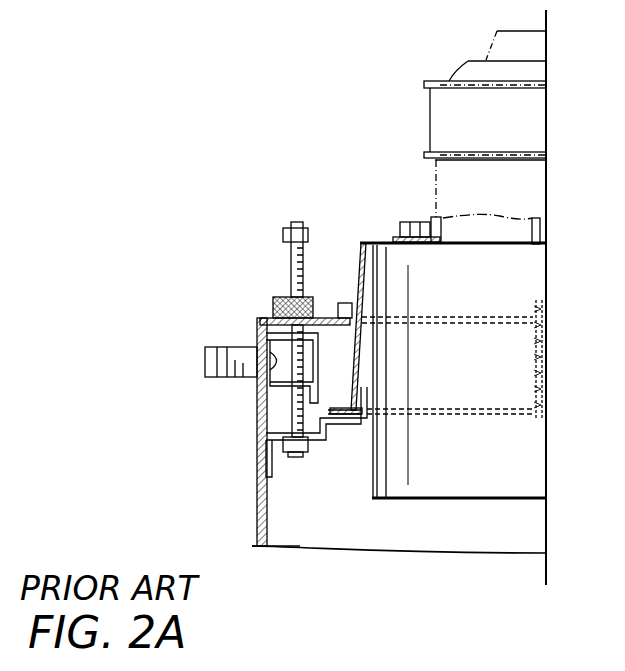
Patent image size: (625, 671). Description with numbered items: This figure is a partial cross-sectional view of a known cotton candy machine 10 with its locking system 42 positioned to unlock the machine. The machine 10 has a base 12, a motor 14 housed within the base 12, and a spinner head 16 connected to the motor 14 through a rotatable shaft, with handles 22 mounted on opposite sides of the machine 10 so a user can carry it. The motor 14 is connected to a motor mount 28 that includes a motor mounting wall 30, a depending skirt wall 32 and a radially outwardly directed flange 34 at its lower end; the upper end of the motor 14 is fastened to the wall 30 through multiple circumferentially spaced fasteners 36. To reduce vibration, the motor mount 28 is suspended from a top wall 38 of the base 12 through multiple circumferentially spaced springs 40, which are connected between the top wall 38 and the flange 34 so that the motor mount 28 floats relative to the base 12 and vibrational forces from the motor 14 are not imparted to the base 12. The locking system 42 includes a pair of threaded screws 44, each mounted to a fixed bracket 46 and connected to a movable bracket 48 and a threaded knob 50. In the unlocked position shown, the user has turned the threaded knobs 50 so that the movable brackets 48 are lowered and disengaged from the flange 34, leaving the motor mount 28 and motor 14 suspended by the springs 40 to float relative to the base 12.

The cotton candy machine 10 is at (209, 94).
The base 12 is at (255, 492).
The motor 14 is at (508, 296).
The spinner head 16 is at (427, 112).
The handles 22 is at (205, 363).
The motor mount 28 is at (352, 261).
The motor mounting wall 30 is at (380, 242).
The depending skirt wall 32 is at (390, 370).
The radially outwardly directed flange 34 is at (333, 420).
The fasteners 36 is at (413, 220).
The top wall 38 is at (326, 318).
The springs 40 is at (520, 370).
The locking system 42 is at (257, 229).
The threaded screws 44 is at (290, 268).
The fixed bracket 46 is at (277, 388).
The movable bracket 48 is at (275, 438).
The threaded knob 50 is at (273, 307).